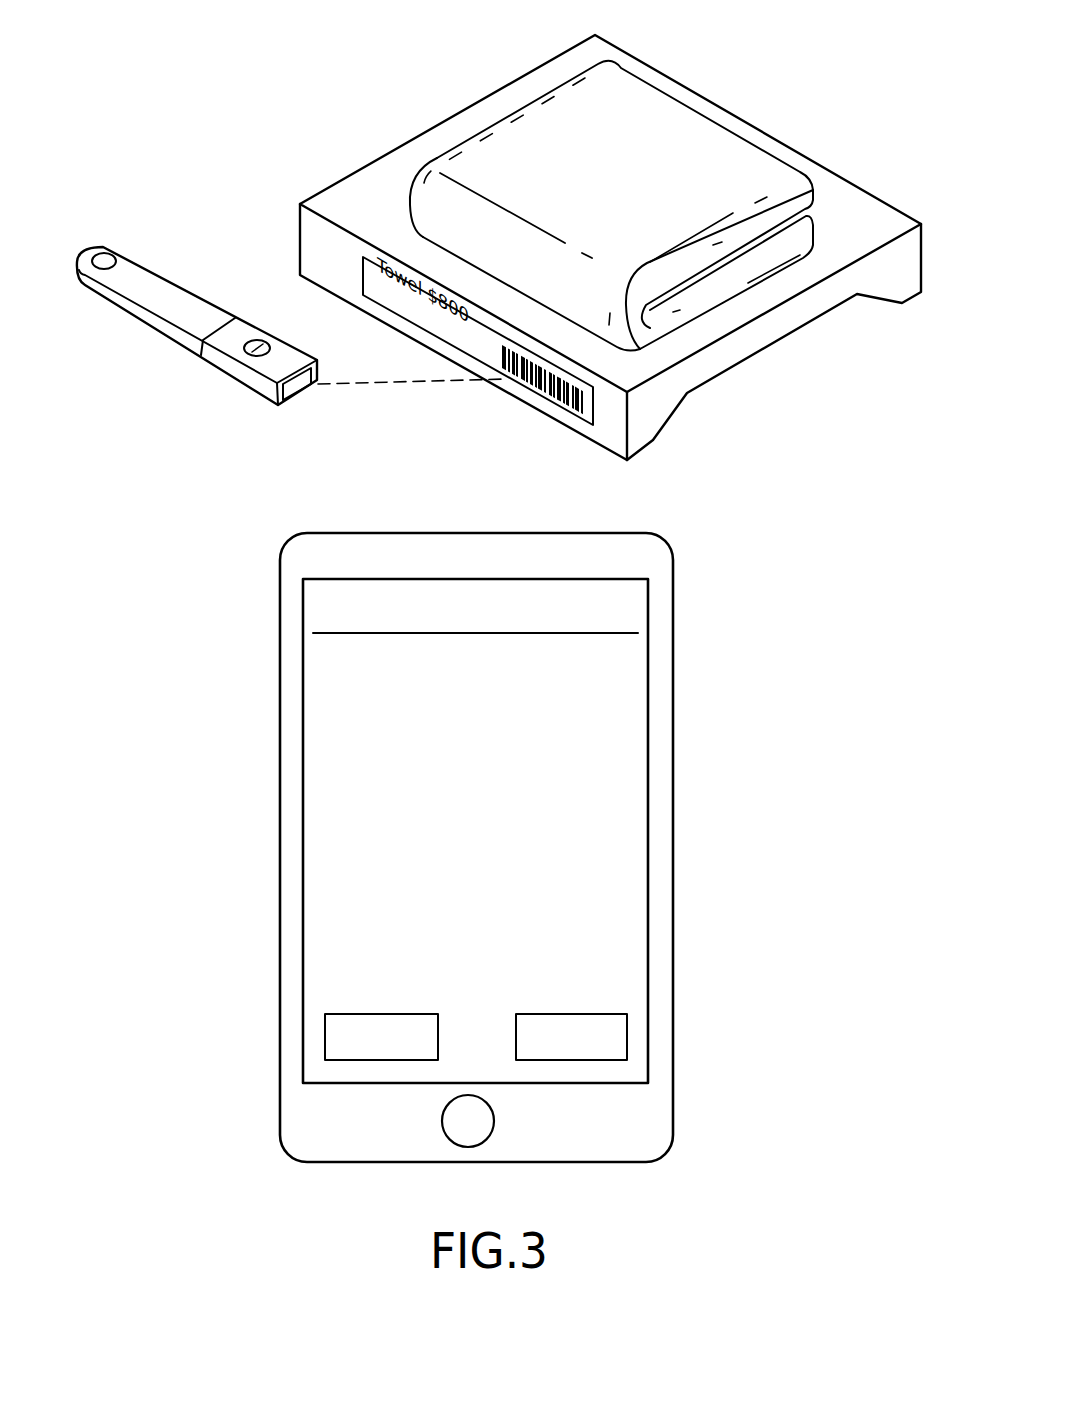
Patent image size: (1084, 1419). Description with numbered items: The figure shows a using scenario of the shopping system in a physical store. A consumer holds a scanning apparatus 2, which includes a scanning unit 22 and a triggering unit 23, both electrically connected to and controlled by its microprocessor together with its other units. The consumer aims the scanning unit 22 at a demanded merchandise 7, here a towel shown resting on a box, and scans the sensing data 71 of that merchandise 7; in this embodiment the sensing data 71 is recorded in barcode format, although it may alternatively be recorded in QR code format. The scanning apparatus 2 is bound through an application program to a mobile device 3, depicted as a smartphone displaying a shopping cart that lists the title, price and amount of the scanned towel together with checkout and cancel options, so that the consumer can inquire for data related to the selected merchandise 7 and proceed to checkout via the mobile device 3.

The scanning apparatus 2 is at (216, 313).
The scanning unit 22 is at (298, 393).
The triggering unit 23 is at (243, 353).
The mobile device 3 is at (695, 738).
The merchandise 7 is at (517, 143).
The sensing data 71 is at (553, 397).